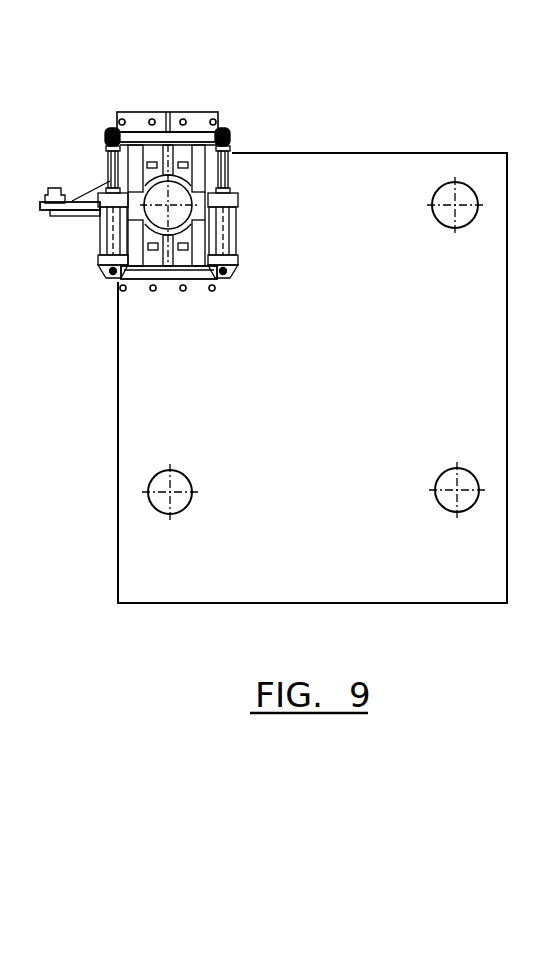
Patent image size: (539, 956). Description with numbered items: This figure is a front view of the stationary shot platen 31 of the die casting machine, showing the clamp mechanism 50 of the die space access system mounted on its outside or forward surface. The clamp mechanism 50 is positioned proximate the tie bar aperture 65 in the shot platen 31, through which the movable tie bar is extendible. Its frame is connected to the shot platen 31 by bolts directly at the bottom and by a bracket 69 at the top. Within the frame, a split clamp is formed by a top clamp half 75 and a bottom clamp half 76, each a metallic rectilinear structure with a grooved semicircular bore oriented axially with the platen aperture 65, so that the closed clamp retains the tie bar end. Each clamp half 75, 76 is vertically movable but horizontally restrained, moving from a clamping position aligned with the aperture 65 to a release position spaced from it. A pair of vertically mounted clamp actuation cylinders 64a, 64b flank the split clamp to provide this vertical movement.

The shot platen 31 is at (416, 143).
The clamp mechanism 50 is at (190, 94).
The bracket 69 is at (218, 113).
The top clamp half 75 is at (200, 176).
The bottom clamp half 76 is at (182, 258).
The tie bar aperture 65 is at (191, 202).
The clamp actuation cylinder 64a is at (85, 286).
The clamp actuation cylinder 64b is at (256, 274).